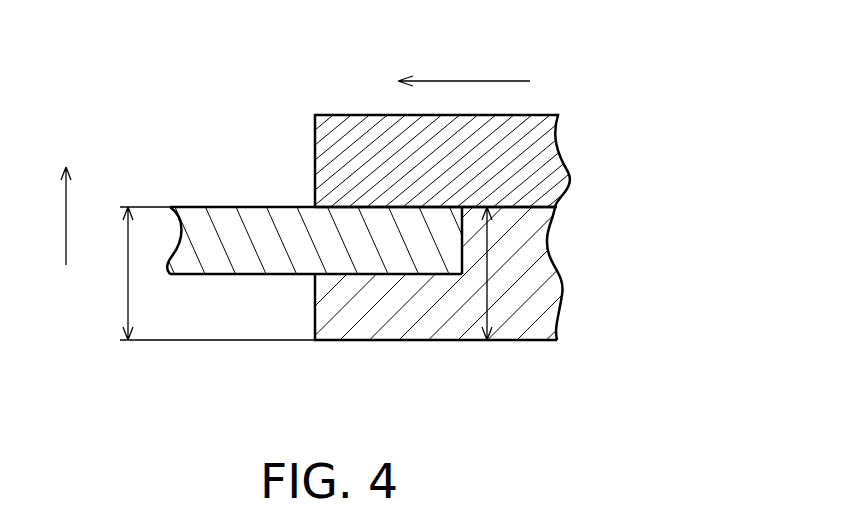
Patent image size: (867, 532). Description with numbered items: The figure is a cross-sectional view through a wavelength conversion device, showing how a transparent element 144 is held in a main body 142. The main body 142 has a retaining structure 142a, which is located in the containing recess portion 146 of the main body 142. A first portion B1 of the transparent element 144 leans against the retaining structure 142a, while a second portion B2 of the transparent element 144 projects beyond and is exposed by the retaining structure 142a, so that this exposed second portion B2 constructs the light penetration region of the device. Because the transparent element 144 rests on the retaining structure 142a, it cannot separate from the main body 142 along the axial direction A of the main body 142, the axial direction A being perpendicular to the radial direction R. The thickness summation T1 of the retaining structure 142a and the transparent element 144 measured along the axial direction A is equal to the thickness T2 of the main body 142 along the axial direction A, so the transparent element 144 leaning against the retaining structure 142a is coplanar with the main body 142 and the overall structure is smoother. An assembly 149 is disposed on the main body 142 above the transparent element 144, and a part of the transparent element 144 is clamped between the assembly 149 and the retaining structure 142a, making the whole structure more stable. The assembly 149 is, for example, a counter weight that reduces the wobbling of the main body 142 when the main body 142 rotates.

The main body 142 is at (484, 296).
The retaining structure 142a is at (343, 312).
The transparent element 144 is at (346, 156).
The containing recess portion 146 is at (396, 369).
The assembly 149 is at (535, 170).
The first portion B1 is at (375, 225).
The second portion B2 is at (252, 228).
The thickness summation T1 is at (204, 273).
The thickness T2 is at (490, 305).
The axial direction A is at (54, 216).
The radial direction R is at (464, 66).